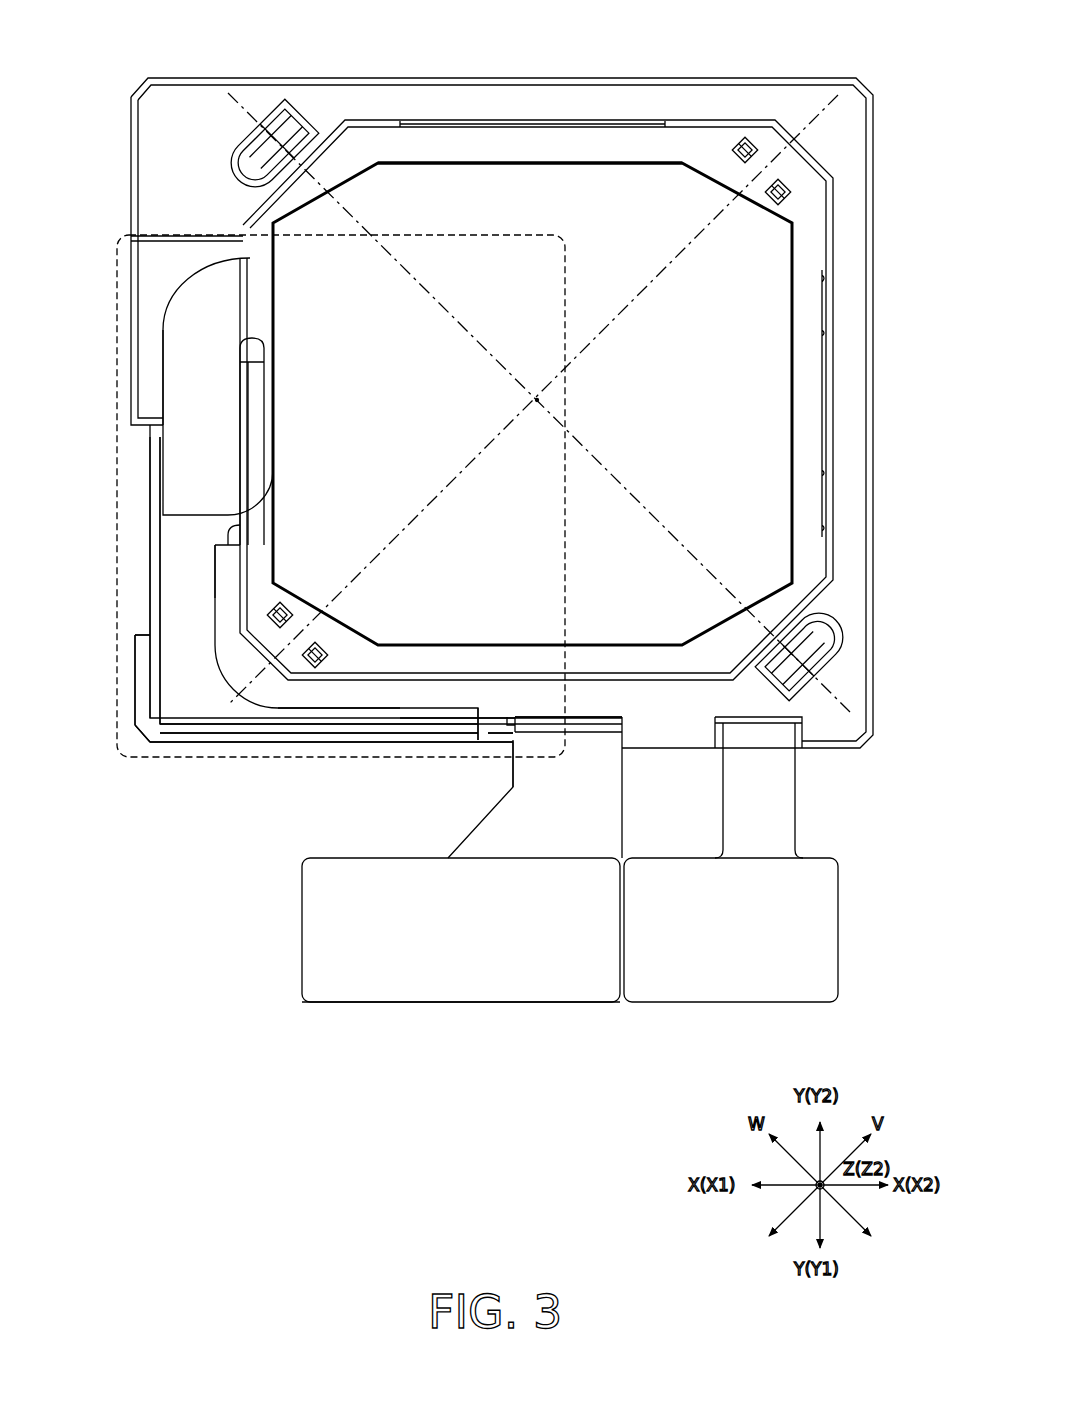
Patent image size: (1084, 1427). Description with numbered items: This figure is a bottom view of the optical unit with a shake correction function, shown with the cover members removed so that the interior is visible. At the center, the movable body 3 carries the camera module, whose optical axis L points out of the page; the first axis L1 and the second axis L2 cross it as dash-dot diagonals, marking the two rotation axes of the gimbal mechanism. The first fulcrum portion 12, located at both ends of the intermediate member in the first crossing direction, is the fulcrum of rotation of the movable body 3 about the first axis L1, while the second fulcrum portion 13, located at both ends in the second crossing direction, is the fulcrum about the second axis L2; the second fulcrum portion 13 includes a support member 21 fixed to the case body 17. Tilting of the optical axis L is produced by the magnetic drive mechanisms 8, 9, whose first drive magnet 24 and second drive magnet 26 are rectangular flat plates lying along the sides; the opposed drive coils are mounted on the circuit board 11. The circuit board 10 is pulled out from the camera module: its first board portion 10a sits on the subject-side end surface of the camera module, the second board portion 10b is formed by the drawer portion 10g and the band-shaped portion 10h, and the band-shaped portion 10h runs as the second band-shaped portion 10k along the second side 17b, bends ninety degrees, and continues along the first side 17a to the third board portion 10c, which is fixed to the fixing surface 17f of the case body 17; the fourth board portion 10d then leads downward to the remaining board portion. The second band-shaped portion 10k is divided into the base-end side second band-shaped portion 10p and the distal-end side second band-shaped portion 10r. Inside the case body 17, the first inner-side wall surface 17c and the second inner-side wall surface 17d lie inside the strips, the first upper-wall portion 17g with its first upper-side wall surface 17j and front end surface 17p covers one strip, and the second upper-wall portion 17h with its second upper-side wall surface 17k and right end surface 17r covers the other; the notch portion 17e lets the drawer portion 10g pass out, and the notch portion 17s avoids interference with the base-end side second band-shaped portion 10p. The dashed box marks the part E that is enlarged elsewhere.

The magnetic drive mechanism 8 is at (884, 384).
The case body 17 is at (131, 178).
The part E is at (567, 237).
The optical axis L is at (535, 398).
The first axis L1 is at (818, 100).
The second axis L2 is at (244, 82).
The first fulcrum portion 12 is at (816, 148).
The second drive magnet 26 is at (626, 118).
The first drive magnet 24 is at (826, 302).
The movable body 3 is at (720, 118).
The support member 21 is at (300, 112).
The second fulcrum portion 13 is at (213, 151).
The circuit board 10 is at (475, 1003).
The first board portion 10a is at (272, 405).
The second board portion 10b is at (195, 742).
The third board portion 10c is at (597, 717).
The fourth board portion 10d is at (622, 823).
The drawer portion 10g is at (163, 372).
The band-shaped portion 10h is at (282, 742).
The second band-shaped portion 10k is at (150, 575).
The base-end side second band-shaped portion 10p is at (150, 520).
The distal-end side second band-shaped portion 10r is at (145, 688).
The circuit board 11 is at (795, 812).
The first side 17a is at (428, 752).
The second side 17b is at (136, 466).
The first inner-side wall surface 17c is at (340, 710).
The second inner-side wall surface 17d is at (215, 565).
The notch portion 17e is at (232, 538).
The fixing surface 17f is at (577, 722).
The first upper-wall portion 17g is at (466, 745).
The second upper-wall portion 17h is at (137, 666).
The first upper-side wall surface 17j is at (398, 733).
The second upper-side wall surface 17k is at (140, 642).
The front end surface 17p is at (238, 742).
The right end surface 17r is at (133, 723).
The notch portion 17s is at (148, 432).
The magnetic drive mechanism 9 is at (527, 58).